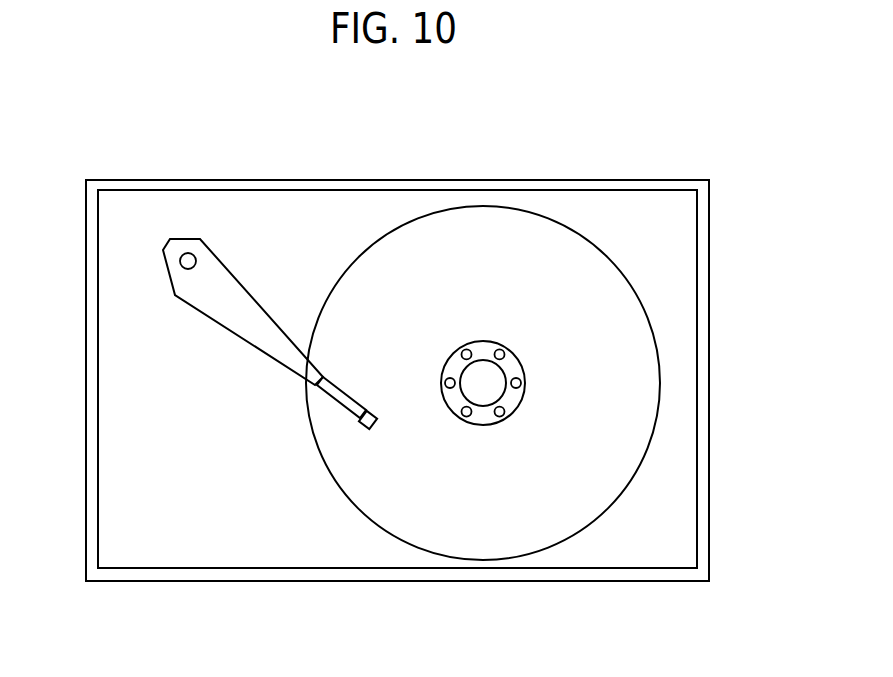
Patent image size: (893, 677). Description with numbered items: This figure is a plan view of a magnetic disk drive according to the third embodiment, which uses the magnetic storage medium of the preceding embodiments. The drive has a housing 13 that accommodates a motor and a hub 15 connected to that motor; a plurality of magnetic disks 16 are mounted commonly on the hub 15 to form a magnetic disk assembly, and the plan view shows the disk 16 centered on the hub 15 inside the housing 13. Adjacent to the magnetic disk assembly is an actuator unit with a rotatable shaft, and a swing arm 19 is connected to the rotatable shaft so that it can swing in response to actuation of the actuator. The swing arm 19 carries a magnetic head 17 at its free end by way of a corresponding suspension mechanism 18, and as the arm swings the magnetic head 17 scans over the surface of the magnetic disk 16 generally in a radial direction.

The housing 13 is at (703, 562).
The hub 15 is at (512, 363).
The magnetic disk 16 is at (522, 230).
The magnetic head 17 is at (378, 413).
The suspension mechanism 18 is at (340, 372).
The swing arm 19 is at (218, 323).